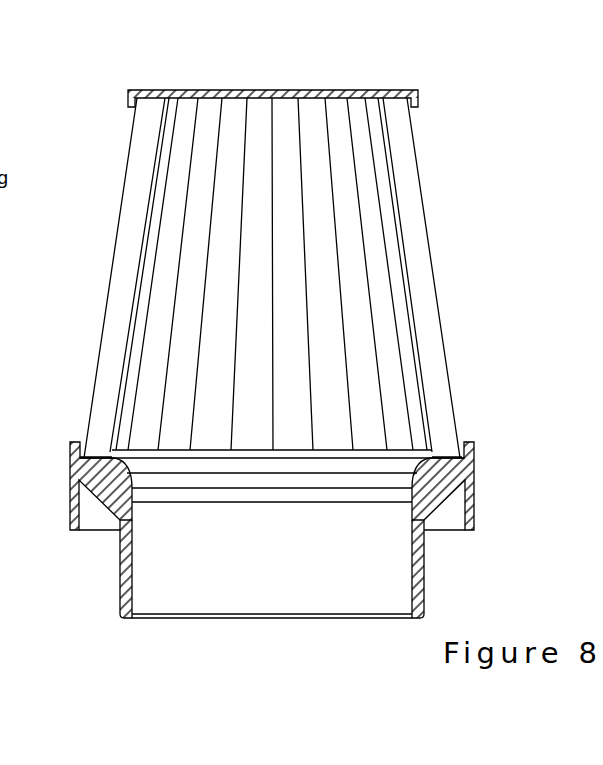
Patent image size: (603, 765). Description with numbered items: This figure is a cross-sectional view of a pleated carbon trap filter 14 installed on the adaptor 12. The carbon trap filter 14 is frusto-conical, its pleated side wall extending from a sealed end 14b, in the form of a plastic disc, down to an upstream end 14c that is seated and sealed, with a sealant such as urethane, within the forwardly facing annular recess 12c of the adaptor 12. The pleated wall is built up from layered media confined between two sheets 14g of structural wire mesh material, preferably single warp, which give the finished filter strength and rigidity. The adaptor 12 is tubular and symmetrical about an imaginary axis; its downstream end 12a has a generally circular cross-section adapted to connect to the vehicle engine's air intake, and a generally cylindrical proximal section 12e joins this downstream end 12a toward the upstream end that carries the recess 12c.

The adaptor 12 is at (532, 484).
The downstream end 12a is at (122, 617).
The forwardly facing annular recess 12c is at (453, 440).
The proximal section 12e is at (137, 508).
The carbon trap filter 14 is at (480, 276).
The sealed end 14b is at (392, 90).
The upstream end 14c is at (84, 436).
The sheets of structural wire mesh material 14g is at (267, 130).